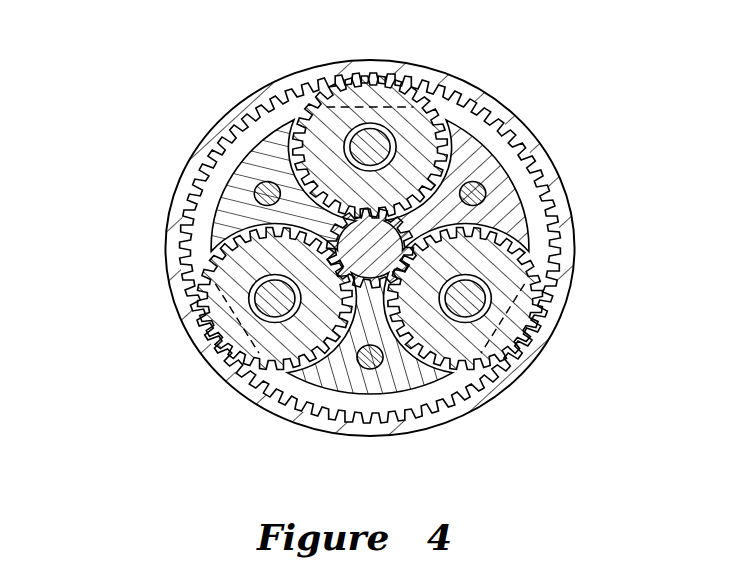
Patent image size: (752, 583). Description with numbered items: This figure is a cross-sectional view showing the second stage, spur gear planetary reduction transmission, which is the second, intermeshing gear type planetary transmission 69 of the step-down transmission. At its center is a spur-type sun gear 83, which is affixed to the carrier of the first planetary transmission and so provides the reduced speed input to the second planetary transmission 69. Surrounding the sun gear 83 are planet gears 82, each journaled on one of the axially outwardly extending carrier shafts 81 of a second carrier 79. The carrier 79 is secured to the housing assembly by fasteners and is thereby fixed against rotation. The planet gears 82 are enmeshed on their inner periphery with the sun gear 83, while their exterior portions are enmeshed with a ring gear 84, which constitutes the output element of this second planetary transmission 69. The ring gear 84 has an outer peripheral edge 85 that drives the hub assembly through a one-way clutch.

The second planetary transmission 69 is at (135, 265).
The second carrier 79 is at (508, 217).
The carrier shafts 81 is at (362, 142).
The planet gears 82 is at (392, 100).
The sun gear 83 is at (333, 232).
The ring gear 84 is at (530, 183).
The outer peripheral edge 85 is at (546, 134).